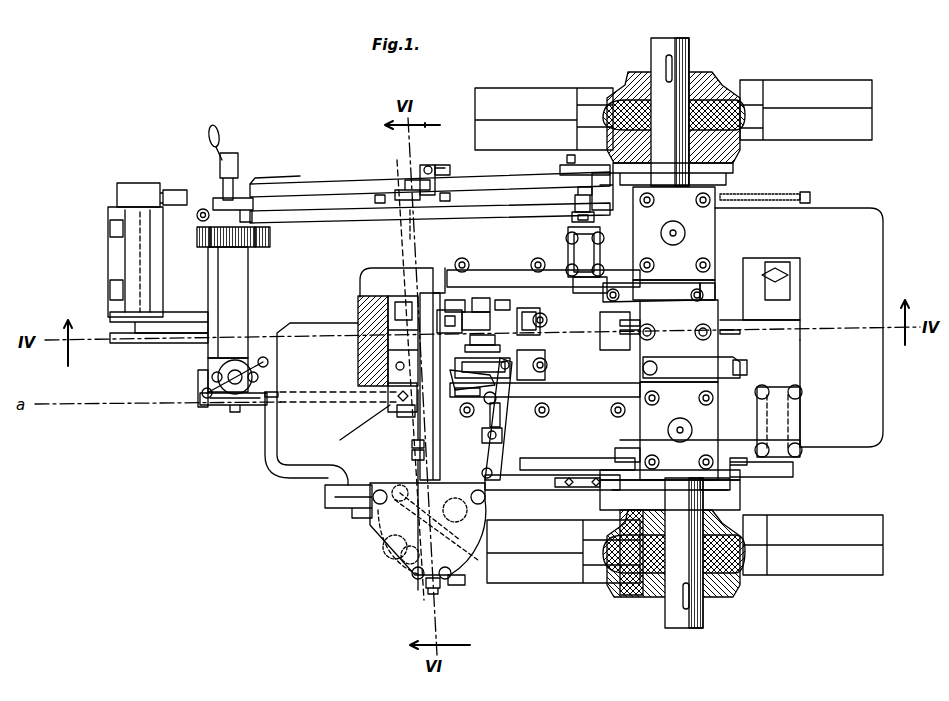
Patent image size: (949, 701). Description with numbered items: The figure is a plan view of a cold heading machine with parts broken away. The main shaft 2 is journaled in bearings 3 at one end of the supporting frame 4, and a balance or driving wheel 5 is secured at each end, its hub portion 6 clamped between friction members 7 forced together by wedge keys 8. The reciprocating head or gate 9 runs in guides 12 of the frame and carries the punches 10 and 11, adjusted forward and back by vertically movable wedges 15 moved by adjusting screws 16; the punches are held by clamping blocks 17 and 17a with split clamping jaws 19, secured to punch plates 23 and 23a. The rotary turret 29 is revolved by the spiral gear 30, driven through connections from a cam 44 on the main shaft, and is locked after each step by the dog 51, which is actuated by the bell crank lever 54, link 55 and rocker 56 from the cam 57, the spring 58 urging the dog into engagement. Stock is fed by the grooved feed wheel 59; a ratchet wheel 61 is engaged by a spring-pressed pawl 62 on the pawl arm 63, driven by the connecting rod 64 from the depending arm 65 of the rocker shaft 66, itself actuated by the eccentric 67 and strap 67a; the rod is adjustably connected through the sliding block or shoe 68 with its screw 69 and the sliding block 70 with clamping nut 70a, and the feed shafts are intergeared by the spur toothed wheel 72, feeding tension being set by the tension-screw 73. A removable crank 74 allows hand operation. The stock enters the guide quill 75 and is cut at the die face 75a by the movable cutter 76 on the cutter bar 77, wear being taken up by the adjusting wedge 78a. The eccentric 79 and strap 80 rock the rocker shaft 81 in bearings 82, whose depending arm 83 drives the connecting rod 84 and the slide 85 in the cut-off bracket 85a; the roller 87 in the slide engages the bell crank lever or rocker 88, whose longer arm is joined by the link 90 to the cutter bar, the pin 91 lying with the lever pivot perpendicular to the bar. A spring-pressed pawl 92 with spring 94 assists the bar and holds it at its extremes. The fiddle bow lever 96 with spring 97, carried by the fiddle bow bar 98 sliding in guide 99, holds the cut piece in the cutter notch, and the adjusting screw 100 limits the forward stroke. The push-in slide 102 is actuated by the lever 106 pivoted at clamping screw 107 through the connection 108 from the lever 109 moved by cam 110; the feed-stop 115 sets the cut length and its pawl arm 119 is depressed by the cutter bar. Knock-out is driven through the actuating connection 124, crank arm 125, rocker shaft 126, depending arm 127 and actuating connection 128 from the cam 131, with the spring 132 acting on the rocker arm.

The main shaft 2 is at (668, 40).
The bearings 3 is at (675, 333).
The supporting frame 4 is at (810, 210).
The balance or driving wheel 5 is at (679, 331).
The hub portion 6 is at (728, 100).
The friction members 7 is at (708, 88).
The wedge keys 8 is at (672, 65).
The reciprocating head or gate 9 is at (487, 339).
The punch 10 is at (455, 345).
The punch 11 is at (440, 318).
The guides 12 is at (496, 280).
The vertically movable wedges 15 is at (530, 330).
The adjusting screws 16 is at (545, 330).
The clamping block 17 is at (483, 334).
The clamping block 17a is at (478, 322).
The split clamping jaw 19 is at (448, 300).
The punch plate 23 is at (486, 357).
The punch plate 23a is at (501, 297).
The rotary turret 29 is at (403, 341).
The spiral gear 30 is at (358, 370).
The cam 44 is at (678, 518).
The reciprocating locking device or dog 51 is at (414, 238).
The bell crank lever 54 is at (430, 165).
The link 55 is at (455, 172).
The rocker 56 is at (598, 173).
The cam 57 is at (735, 160).
The spring 58 is at (410, 192).
The feed wheel 59 is at (222, 406).
The ratchet wheel 61 is at (262, 247).
The spring-pressed pawl 62 is at (230, 247).
The pawl arm 63 is at (222, 200).
The connecting rod 64 is at (330, 214).
The depending arm 65 is at (572, 223).
The rocker shaft 66 is at (568, 243).
The eccentric 67 is at (651, 292).
The strap 67a is at (681, 290).
The sliding block or shoe 68 is at (252, 212).
The screw 69 is at (197, 215).
The sliding block 70 is at (575, 200).
The clamping nut 70a is at (577, 187).
The spur toothed wheel 72 is at (205, 245).
The tension-screw 73 is at (236, 368).
The crank 74 is at (221, 132).
The guide quill 75 is at (272, 405).
The cut-off die face 75a is at (365, 427).
The movable cutter 76 is at (388, 395).
The cutter bar 77 is at (397, 408).
The adjusting wedge 78a is at (485, 419).
The eccentric 79 is at (660, 362).
The strap 80 is at (695, 367).
The rocker shaft 81 is at (790, 415).
The bearings 82 is at (790, 432).
The depending arm 83 is at (772, 470).
The connecting rod 84 is at (536, 485).
The slide 85 is at (338, 497).
The cut-off bracket 85a is at (458, 578).
The roller 87 is at (392, 487).
The bell crank lever or rocker 88 is at (385, 540).
The link 90 is at (429, 512).
The pin 91 is at (428, 537).
The spring-pressed pawl 92 is at (410, 570).
The spring 94 is at (400, 555).
The fiddle bow lever 96 is at (412, 443).
The spring 97 is at (412, 455).
The fiddle bow bar 98 is at (418, 470).
The guide 99 is at (407, 415).
The adjusting screw 100 is at (430, 590).
The slide 102 is at (500, 383).
The lever 106 is at (498, 403).
The clamping screw 107 is at (502, 433).
The connection 108 is at (560, 470).
The lever 109 is at (622, 452).
The cam 110 is at (676, 482).
The adjustable feed-stop 115 is at (500, 395).
The pawl arm 119 is at (490, 412).
The actuating connection 124 is at (193, 326).
The crank arm 125 is at (133, 338).
The rocker shaft 126 is at (115, 255).
The depending arm 127 is at (140, 192).
The actuating connection 128 is at (300, 190).
The cam 131 is at (675, 231).
The spring 132 is at (765, 186).